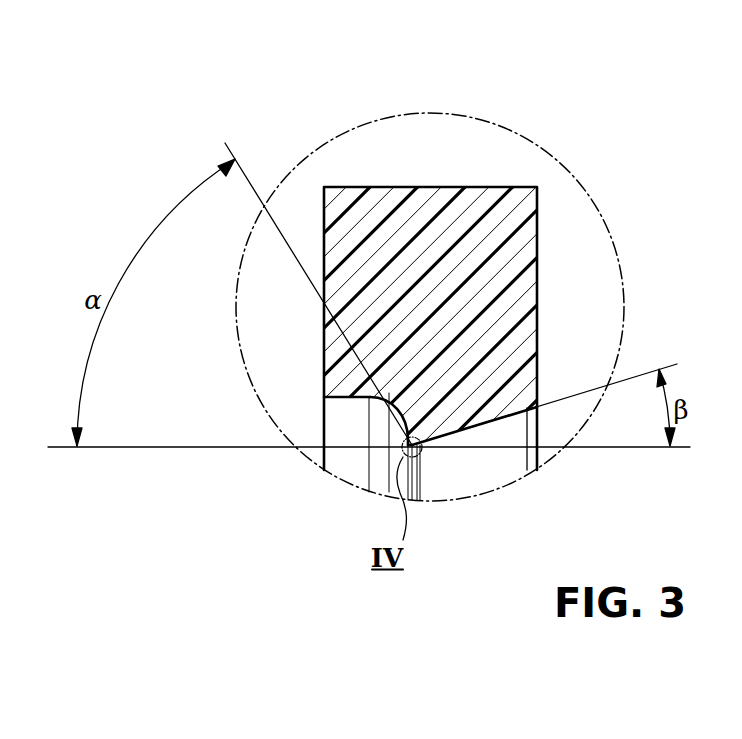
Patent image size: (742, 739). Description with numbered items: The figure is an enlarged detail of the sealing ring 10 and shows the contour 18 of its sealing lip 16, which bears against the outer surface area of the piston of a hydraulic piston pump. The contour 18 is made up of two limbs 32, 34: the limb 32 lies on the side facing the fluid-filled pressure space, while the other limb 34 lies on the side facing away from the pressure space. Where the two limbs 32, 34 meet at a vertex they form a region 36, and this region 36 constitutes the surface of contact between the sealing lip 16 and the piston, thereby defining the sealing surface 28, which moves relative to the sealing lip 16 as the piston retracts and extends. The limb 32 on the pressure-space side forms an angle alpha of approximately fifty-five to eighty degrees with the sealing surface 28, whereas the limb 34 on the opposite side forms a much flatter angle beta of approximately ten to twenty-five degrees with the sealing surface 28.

The sealing ring 10 is at (443, 188).
The sealing lip 16 is at (445, 430).
The contour 18 is at (355, 409).
The sealing surface 28 is at (418, 453).
The limb 32 is at (400, 410).
The limb 34 is at (497, 418).
The region 36 is at (401, 450).